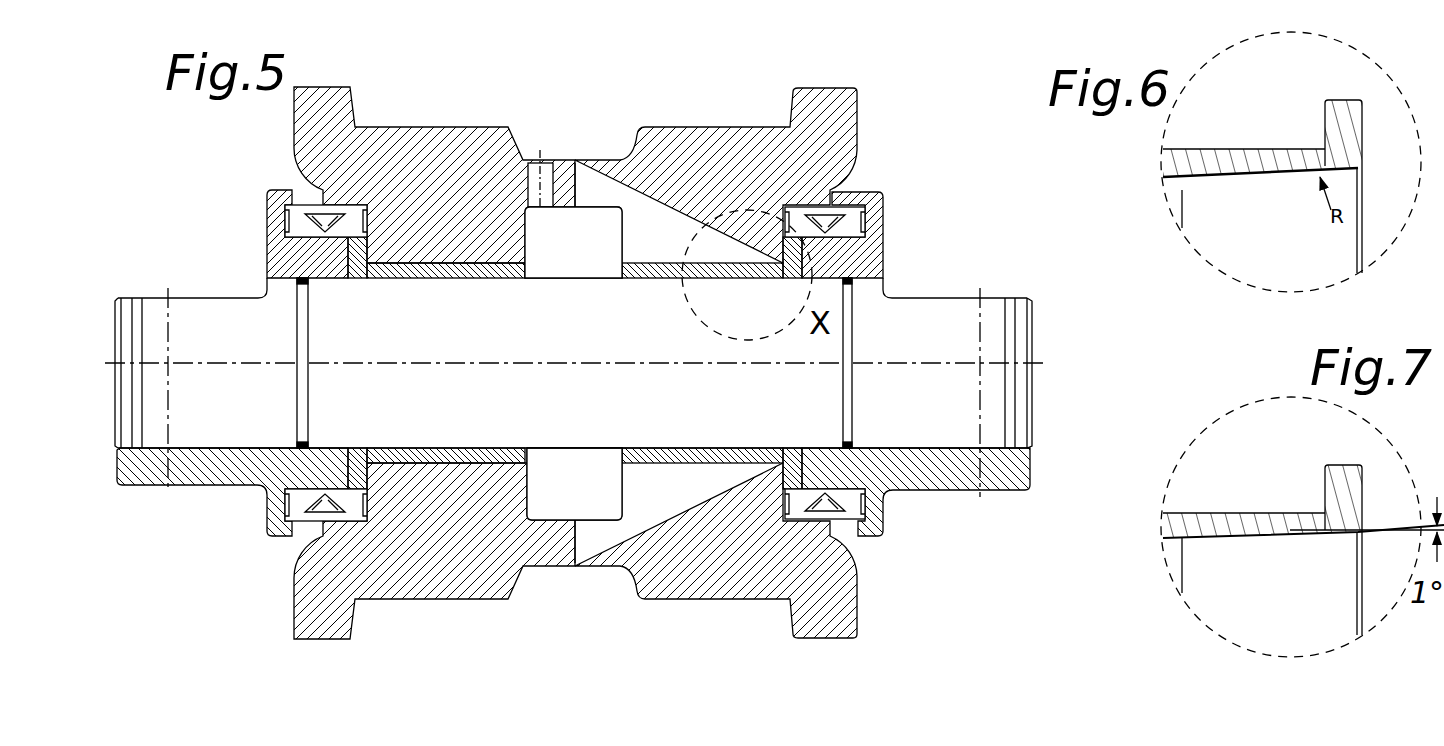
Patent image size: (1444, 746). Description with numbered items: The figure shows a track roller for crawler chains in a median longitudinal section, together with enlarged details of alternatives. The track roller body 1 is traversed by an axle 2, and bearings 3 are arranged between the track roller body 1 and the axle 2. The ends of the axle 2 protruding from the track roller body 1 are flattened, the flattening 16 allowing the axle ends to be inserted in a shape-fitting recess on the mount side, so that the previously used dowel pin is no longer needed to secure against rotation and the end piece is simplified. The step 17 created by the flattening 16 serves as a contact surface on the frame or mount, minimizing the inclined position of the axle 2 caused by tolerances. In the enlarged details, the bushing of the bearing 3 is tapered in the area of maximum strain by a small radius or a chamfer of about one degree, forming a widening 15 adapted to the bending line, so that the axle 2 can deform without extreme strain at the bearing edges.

In FIG. 5, the track roller body 1 is at (695, 158).
In FIG. 5, the axle 2 is at (593, 326).
In FIG. 6, the bearing 3 is at (1243, 146).
In FIG. 7, the bearing 3 is at (1252, 506).
In FIG. 6, the widening 15 is at (1343, 175).
In FIG. 7, the widening 15 is at (1337, 535).
In FIG. 5, the flattening 16 is at (180, 293).
In FIG. 5, the step 17 is at (258, 256).